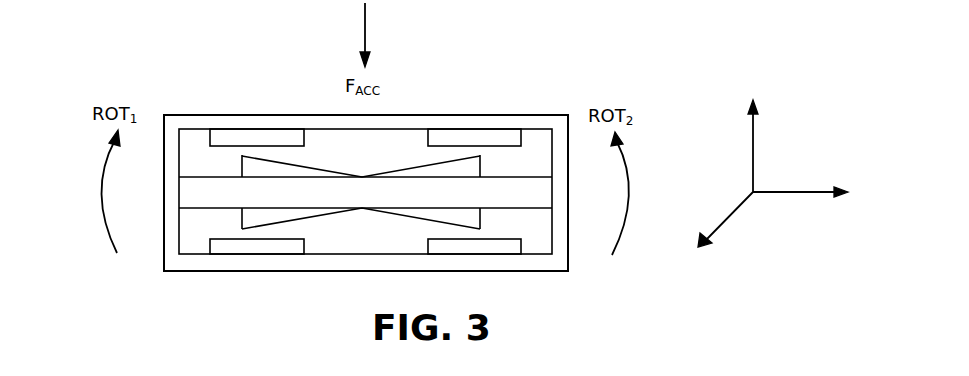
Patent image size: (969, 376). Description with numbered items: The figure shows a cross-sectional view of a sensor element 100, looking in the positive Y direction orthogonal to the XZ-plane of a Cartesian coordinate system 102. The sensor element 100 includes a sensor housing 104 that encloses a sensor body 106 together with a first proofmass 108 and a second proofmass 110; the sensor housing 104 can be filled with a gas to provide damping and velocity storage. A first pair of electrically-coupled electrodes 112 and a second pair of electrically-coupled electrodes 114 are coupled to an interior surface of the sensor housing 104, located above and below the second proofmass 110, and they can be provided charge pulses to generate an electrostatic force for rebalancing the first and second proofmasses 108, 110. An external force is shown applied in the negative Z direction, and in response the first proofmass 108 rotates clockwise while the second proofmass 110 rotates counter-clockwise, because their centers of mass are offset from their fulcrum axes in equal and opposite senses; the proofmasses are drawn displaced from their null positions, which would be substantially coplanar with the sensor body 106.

The sensor element 100 is at (115, 41).
The Cartesian coordinate system 102 is at (805, 92).
The sensor housing 104 is at (164, 262).
The sensor body 106 is at (365, 192).
The first proofmass 108 is at (297, 165).
The second proofmass 110 is at (240, 212).
The first pair of electrically-coupled electrodes 112 is at (243, 134).
The second pair of electrically-coupled electrodes 114 is at (479, 134).